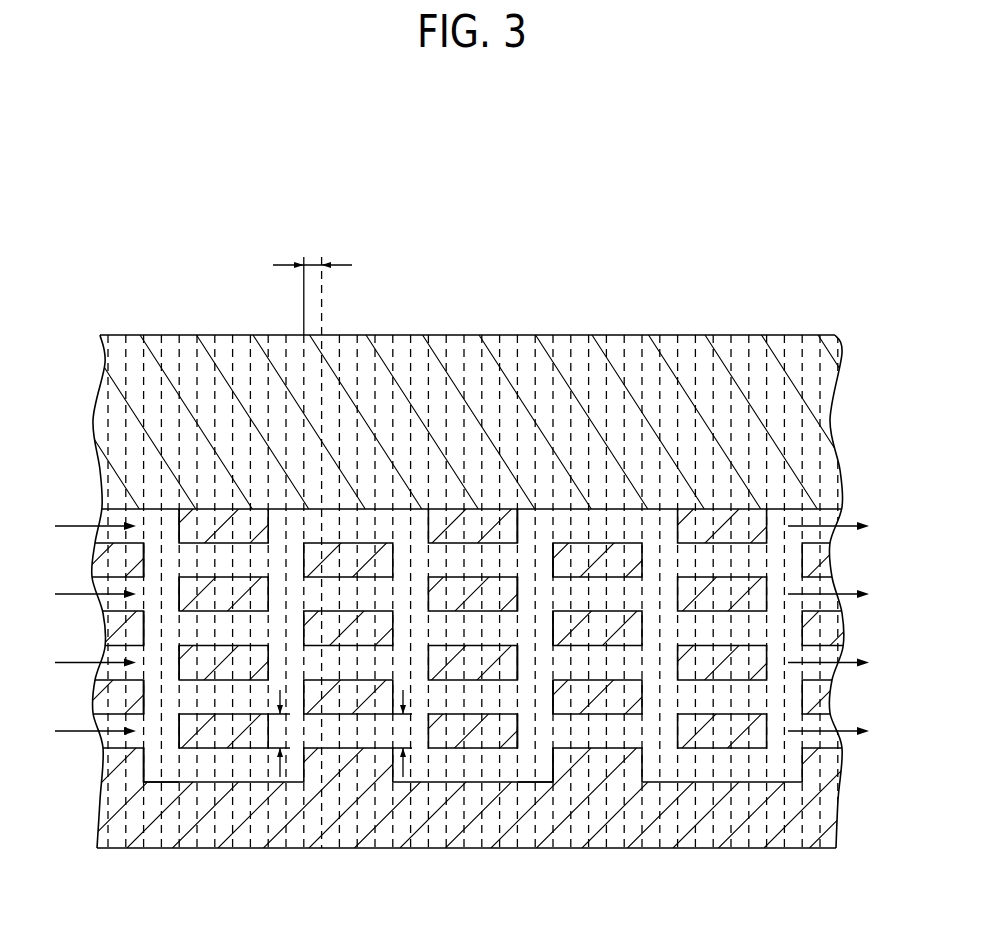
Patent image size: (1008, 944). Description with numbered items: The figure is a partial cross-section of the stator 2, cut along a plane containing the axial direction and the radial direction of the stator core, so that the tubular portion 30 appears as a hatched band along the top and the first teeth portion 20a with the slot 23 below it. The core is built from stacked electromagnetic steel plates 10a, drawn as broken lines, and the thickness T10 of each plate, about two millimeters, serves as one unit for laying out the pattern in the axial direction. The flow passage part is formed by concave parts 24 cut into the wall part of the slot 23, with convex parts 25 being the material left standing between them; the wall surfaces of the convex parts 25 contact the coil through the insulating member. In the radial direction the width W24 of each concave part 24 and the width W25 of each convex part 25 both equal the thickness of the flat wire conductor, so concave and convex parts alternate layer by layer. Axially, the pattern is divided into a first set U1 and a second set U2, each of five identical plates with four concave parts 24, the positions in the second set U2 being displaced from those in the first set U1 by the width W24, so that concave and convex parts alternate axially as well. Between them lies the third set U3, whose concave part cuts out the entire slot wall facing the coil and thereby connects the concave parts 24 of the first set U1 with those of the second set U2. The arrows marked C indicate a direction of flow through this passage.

The stator 2 is at (708, 197).
The electromagnetic steel plate 10a is at (320, 342).
The tubular portion 30 is at (705, 335).
The thickness of electromagnetic steel plate T10 is at (312, 282).
The first teeth portion 20a is at (754, 850).
The slot 23 is at (172, 762).
The concave part 24 is at (337, 662).
The convex part 25 is at (210, 662).
The width of convex part W25 is at (300, 733).
The width of concave part W24 is at (425, 733).
The first set U1 is at (517, 852).
The second set U2 is at (642, 852).
The third set U3 is at (553, 852).
The flow direction of coolant C is at (463, 629).